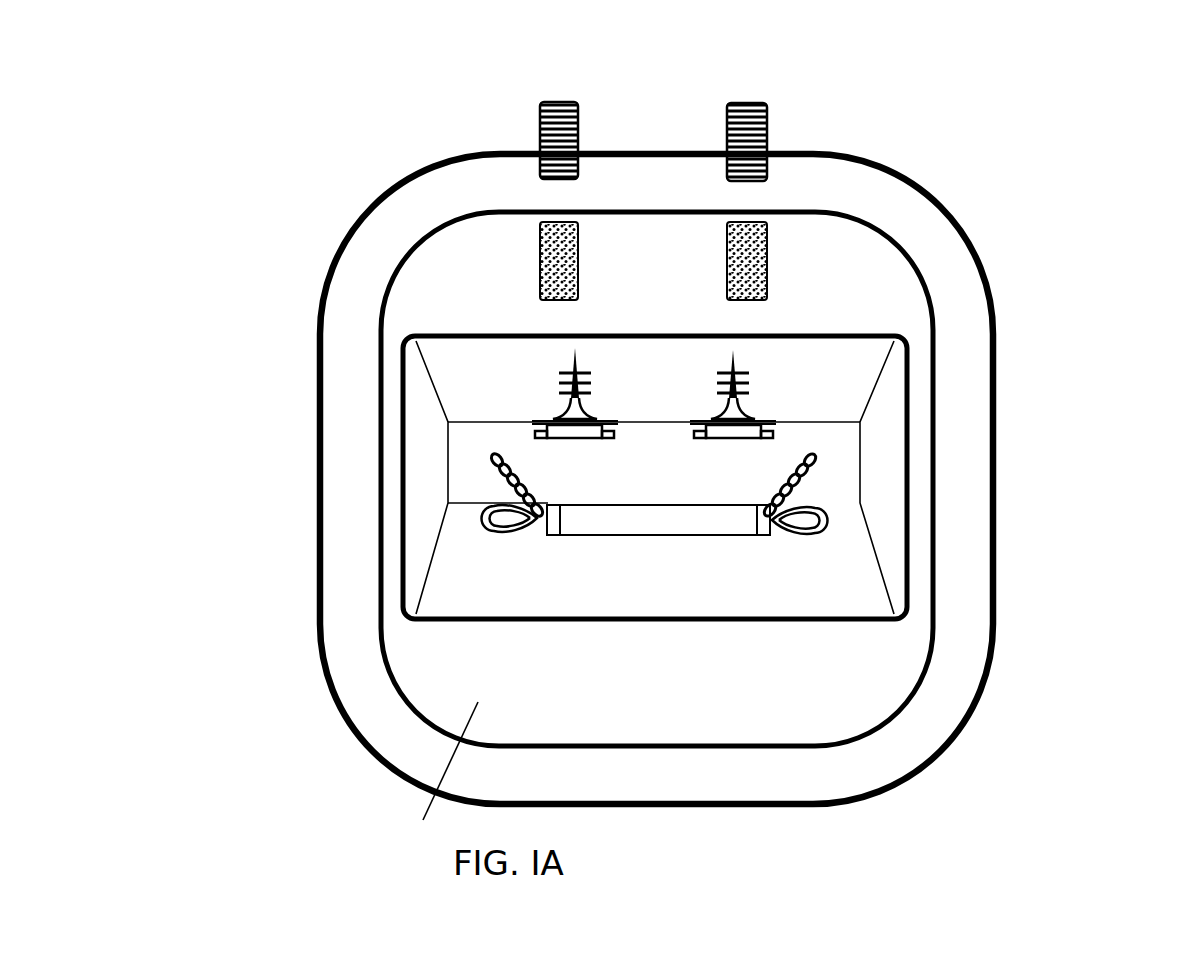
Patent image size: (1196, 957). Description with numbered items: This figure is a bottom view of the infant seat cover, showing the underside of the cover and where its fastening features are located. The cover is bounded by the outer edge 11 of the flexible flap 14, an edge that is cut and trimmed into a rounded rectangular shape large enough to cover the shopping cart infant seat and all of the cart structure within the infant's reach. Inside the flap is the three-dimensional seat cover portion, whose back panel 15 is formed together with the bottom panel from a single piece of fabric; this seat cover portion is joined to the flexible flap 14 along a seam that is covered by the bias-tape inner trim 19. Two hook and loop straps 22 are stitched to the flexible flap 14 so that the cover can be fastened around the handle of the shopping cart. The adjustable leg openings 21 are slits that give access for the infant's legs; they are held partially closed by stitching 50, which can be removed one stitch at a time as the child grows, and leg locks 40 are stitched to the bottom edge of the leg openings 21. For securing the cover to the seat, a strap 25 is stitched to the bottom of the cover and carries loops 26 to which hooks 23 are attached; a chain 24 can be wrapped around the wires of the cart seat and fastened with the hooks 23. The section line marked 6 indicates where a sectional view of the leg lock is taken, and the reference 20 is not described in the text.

The outer edge 11 is at (900, 180).
The flexible flap 14 is at (953, 622).
The back panel 15 is at (669, 717).
The inner trim 19 is at (437, 331).
The inner wall 20 is at (450, 223).
The leg openings 21 is at (723, 397).
The hook and loop straps 22 is at (750, 102).
The hooks 23 is at (817, 510).
The chain 24 is at (505, 482).
The strap 25 is at (562, 523).
The loops 26 is at (770, 537).
The leg locks 40 is at (545, 435).
The stitching 50 is at (571, 348).
The section line 6- 6 is at (423, 820).